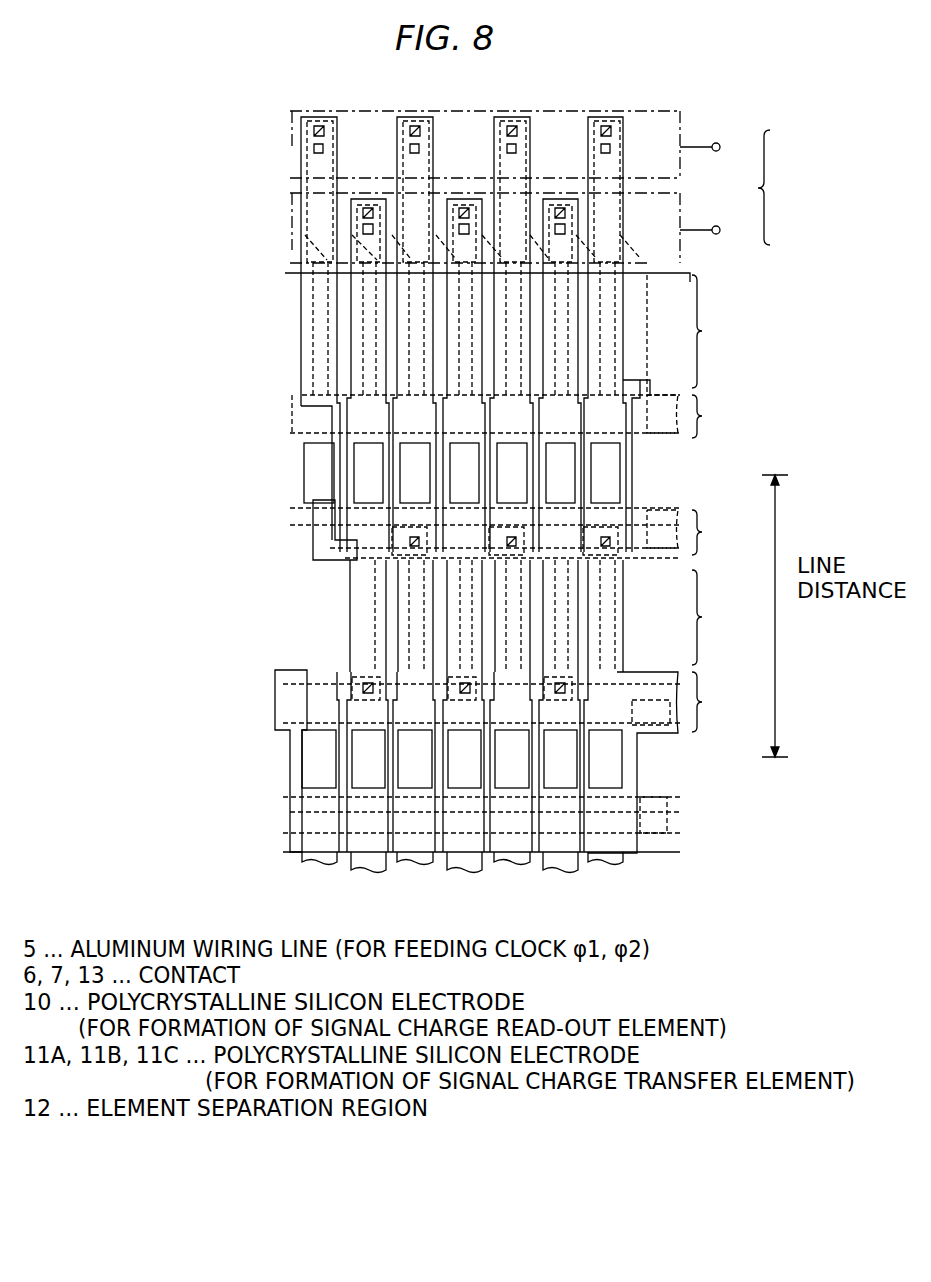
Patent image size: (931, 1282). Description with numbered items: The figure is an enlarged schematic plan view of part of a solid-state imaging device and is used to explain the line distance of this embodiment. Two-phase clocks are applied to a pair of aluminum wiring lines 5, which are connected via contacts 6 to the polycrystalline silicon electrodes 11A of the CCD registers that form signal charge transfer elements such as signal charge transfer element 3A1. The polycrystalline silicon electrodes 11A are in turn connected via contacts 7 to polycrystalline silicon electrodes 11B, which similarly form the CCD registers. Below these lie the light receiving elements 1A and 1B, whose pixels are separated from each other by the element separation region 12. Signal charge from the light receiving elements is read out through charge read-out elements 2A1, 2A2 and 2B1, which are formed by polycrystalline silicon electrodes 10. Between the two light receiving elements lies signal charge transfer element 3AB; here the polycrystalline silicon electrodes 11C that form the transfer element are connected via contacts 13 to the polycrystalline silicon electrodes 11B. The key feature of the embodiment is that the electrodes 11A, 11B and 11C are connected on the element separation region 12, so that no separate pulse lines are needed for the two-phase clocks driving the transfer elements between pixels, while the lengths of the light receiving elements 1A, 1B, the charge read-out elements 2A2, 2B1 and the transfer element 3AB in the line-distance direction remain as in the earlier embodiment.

The aluminum wiring line 5 is at (677, 117).
The contact 6 is at (310, 148).
The contact 7 is at (312, 128).
The contact 13 is at (410, 545).
The polycrystalline silicon electrode 10 is at (297, 433).
The polycrystalline silicon electrode 11A is at (330, 305).
The polycrystalline silicon electrode 11B is at (305, 355).
The polycrystalline silicon electrode 11C is at (378, 620).
The element separation region 12 is at (650, 425).
The light receiving element 1A is at (612, 480).
The light receiving element 1B is at (615, 770).
The charge read-out element 2A1 is at (520, 416).
The charge read-out element 2A2 is at (721, 532).
The charge read-out element 2B1 is at (722, 702).
The signal charge transfer element 3A1 is at (517, 330).
The signal charge transfer element 3AB is at (722, 617).